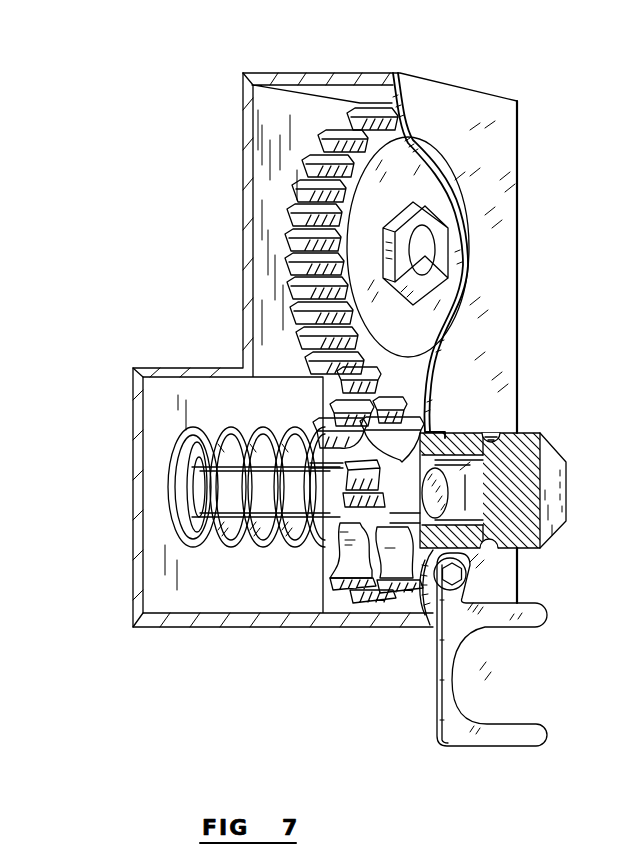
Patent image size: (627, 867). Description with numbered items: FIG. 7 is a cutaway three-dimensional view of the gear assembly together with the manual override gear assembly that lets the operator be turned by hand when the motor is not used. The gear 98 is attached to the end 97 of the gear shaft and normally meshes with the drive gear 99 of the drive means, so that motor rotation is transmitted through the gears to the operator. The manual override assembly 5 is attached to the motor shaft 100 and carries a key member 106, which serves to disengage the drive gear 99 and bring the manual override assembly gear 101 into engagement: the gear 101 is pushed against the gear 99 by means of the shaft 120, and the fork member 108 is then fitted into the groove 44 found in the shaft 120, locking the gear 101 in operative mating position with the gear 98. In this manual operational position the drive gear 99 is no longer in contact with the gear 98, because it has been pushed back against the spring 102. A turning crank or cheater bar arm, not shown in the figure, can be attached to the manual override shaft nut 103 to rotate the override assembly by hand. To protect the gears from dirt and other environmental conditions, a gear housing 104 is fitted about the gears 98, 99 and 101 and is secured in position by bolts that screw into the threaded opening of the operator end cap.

The gear housing 104 is at (350, 73).
The gear 98 is at (287, 203).
The end 97 is at (418, 203).
The motor shaft 100 is at (268, 483).
The shaft 120 is at (480, 440).
The groove 44 is at (500, 433).
The manual override shaft nut 103 is at (550, 467).
The key member 106 is at (458, 493).
The manual override assembly 5 is at (560, 572).
The spring 102 is at (234, 535).
The drive gear 99 is at (348, 562).
The manual override assembly gear 101 is at (412, 622).
The fork member 108 is at (450, 689).